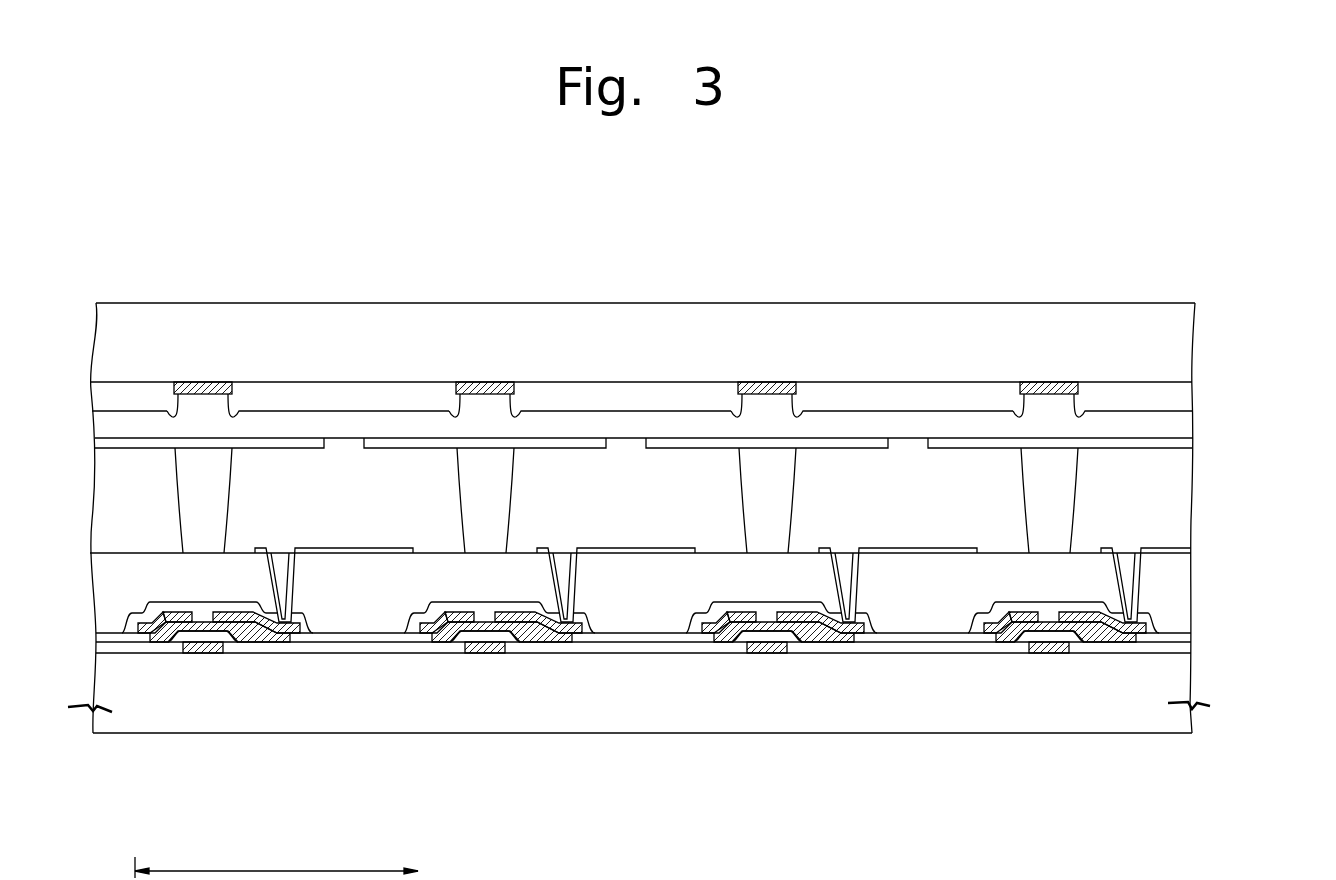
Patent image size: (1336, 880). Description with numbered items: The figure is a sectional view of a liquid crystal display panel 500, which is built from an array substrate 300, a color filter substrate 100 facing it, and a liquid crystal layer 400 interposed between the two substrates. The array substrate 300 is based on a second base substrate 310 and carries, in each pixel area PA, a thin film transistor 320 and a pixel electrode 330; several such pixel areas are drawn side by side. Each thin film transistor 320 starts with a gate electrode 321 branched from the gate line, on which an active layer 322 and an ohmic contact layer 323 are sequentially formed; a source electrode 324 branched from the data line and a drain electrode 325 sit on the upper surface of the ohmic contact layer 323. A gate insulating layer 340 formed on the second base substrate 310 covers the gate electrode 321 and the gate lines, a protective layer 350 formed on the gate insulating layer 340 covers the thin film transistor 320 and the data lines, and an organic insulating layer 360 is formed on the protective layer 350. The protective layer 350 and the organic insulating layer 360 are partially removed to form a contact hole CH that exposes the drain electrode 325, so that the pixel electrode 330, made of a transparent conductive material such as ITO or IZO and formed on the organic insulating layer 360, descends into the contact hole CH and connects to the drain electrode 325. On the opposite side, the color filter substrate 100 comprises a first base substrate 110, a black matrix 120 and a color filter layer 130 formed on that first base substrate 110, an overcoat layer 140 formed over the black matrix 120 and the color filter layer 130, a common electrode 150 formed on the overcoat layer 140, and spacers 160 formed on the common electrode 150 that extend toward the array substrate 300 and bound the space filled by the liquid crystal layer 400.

The color filter substrate 100 is at (1286, 344).
The first base substrate 110 is at (1182, 351).
The black matrix 120 is at (1052, 385).
The color filter layer 130 is at (1182, 390).
The overcoat layer 140 is at (1180, 427).
The common electrode 150 is at (1180, 446).
The spacers 160 is at (1068, 496).
The array substrate 300 is at (1286, 584).
The second base substrate 310 is at (1178, 685).
The thin film transistor 320 is at (370, 805).
The gate electrode 321 is at (203, 655).
The active layer 322 is at (252, 640).
The ohmic contact layer 323 is at (157, 632).
The source electrode 324 is at (138, 634).
The drain electrode 325 is at (275, 625).
The pixel electrode 330 is at (345, 553).
The gate insulating layer 340 is at (1182, 650).
The protective layer 350 is at (1185, 637).
The organic insulating layer 360 is at (1182, 593).
The liquid crystal layer 400 is at (1182, 525).
The liquid crystal display panel 500 is at (1160, 237).
The contact hole CH is at (285, 556).
The pixel area PA is at (276, 862).